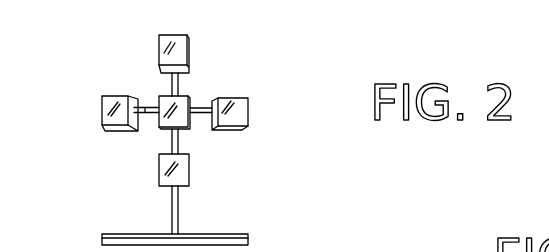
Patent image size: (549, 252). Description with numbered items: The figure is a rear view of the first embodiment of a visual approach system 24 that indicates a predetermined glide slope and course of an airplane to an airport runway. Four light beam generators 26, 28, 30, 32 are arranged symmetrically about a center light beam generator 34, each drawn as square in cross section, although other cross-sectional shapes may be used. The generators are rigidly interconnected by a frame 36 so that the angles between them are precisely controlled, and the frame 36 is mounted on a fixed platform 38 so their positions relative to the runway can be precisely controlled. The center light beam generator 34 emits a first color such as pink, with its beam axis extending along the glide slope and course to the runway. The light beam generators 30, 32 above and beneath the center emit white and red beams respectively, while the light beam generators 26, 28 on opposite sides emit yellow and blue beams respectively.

The switch assembly 24 is at (258, 56).
The light beam generator 26 is at (103, 110).
The light beam generator 28 is at (241, 111).
The light beam generator 30 is at (189, 46).
The light beam generator 32 is at (167, 166).
The center light beam generator 34 is at (184, 98).
The frame 36 is at (171, 90).
The fixed platform 38 is at (148, 234).